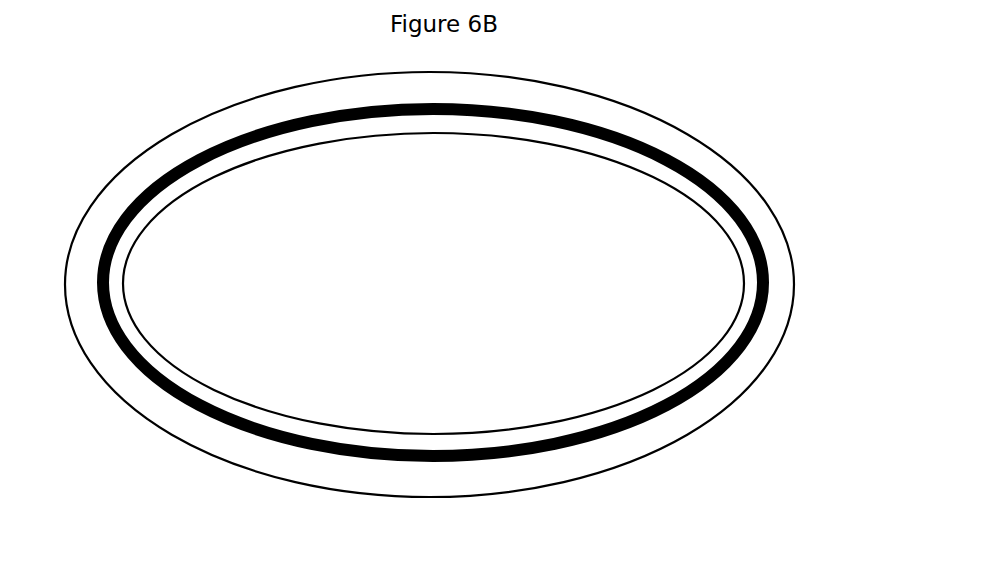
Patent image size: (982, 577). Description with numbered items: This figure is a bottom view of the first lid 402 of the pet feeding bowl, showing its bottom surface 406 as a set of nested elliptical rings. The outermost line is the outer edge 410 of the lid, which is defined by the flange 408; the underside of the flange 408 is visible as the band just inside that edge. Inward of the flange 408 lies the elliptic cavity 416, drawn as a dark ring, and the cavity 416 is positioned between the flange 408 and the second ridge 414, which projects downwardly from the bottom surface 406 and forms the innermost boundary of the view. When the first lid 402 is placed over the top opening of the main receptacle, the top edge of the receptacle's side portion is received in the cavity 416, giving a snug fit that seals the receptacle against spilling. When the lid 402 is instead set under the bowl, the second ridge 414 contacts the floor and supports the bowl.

The first lid 402 is at (134, 115).
The bottom surface 406 is at (451, 286).
The flange 408 is at (739, 197).
The outer edge 410 is at (756, 391).
The second ridge 414 is at (558, 427).
The cavity 416 is at (663, 152).